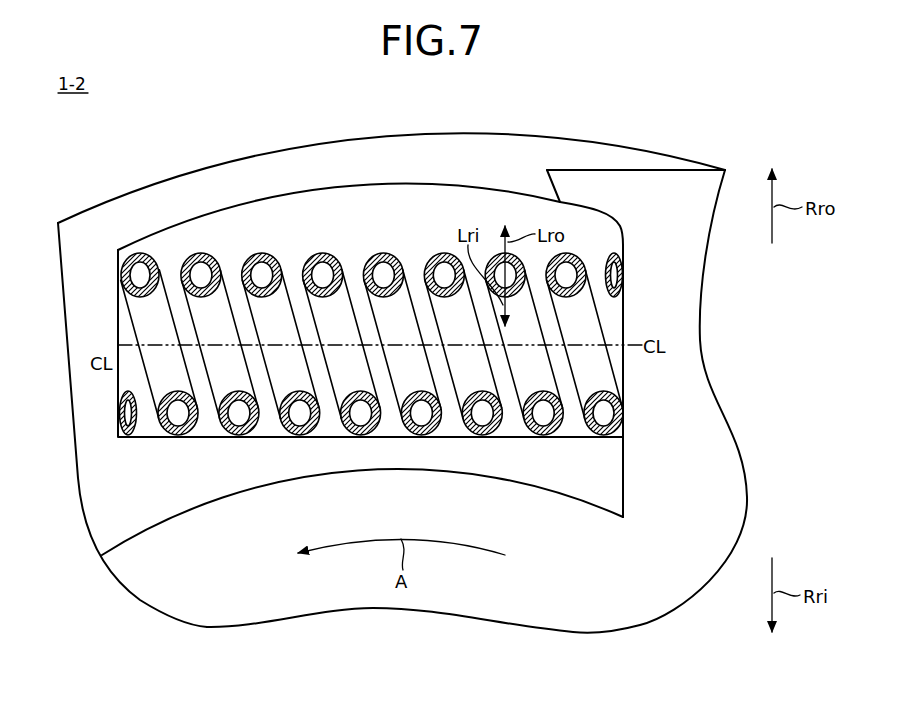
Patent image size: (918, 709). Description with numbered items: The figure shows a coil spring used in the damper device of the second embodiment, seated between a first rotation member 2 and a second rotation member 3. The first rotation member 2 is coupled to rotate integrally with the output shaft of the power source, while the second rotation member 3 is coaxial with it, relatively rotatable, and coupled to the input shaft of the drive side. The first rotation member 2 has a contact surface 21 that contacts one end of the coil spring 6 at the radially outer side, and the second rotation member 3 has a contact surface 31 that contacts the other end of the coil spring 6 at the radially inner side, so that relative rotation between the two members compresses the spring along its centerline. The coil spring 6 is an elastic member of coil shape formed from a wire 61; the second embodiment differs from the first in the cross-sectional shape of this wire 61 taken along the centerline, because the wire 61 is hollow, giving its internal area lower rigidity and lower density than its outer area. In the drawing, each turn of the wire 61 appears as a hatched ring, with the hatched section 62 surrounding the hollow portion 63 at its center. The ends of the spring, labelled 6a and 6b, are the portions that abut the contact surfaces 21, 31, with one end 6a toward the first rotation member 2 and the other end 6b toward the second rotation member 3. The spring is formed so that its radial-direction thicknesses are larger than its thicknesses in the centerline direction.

The first rotation member 2 is at (181, 625).
The second rotation member 3 is at (190, 170).
The contact surface 21 is at (622, 318).
The contact surface 31 is at (124, 334).
The coil spring 6 is at (372, 315).
The wire 61 is at (320, 253).
The wire section of spring 62 is at (434, 246).
The hollow center of wire section 63 is at (447, 274).
The one end of coil spring 6a is at (626, 410).
The other end of coil spring 6b is at (116, 277).